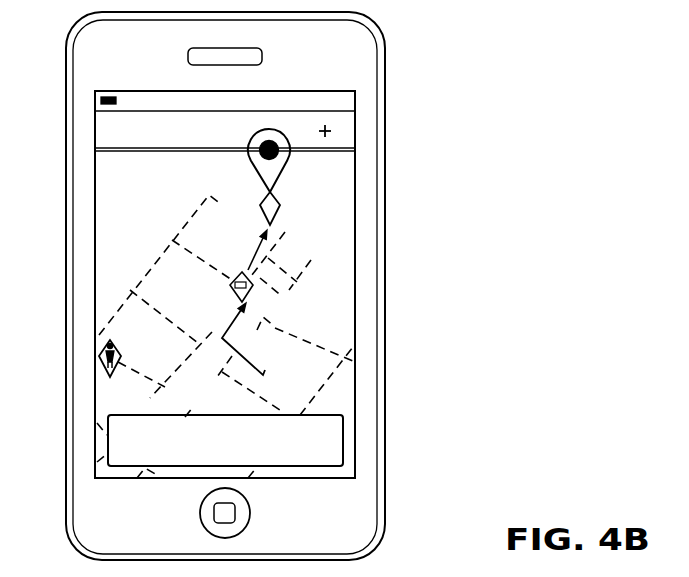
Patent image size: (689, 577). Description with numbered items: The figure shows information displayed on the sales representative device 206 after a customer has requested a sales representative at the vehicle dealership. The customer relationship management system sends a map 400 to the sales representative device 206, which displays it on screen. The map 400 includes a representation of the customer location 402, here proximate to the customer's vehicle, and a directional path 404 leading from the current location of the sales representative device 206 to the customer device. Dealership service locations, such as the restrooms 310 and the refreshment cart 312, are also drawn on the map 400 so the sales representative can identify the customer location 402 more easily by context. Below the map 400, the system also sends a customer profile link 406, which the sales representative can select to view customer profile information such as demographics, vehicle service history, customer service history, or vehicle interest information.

The sales representative device 206 is at (384, 102).
The customer location 402 is at (282, 173).
The refreshment cart 312 is at (232, 279).
The directional path 404 is at (255, 362).
The map 400 is at (69, 338).
The restrooms 310 is at (103, 348).
The customer profile link 406 is at (345, 443).